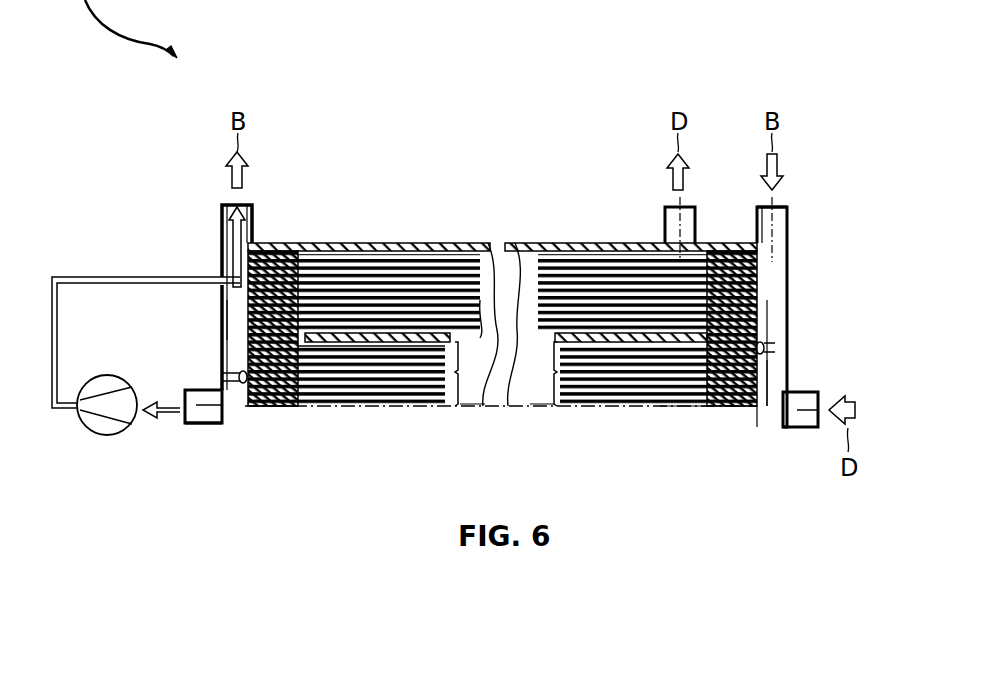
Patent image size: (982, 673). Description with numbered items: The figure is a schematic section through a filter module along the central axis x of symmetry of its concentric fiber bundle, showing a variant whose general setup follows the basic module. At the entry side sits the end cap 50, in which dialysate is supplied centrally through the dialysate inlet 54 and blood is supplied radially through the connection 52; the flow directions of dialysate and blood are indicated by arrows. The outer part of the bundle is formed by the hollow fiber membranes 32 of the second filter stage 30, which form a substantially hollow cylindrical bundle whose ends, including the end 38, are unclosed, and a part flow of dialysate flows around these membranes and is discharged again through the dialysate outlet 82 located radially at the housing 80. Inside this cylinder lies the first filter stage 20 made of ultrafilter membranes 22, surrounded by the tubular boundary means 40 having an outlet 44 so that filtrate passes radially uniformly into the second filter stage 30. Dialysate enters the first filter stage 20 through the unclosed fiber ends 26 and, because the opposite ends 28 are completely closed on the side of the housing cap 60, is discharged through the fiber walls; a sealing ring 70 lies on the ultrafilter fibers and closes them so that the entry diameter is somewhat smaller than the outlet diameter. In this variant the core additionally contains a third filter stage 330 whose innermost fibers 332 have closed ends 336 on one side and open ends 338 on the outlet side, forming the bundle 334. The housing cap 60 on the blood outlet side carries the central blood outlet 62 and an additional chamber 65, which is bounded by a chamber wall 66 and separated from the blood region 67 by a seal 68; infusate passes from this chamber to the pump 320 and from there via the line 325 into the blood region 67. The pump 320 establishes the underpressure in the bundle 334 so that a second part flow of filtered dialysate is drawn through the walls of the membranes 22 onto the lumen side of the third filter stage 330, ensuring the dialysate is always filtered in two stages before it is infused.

The first filter stage 20 is at (483, 407).
The ultrafilter membranes 22 is at (625, 355).
The unclosed hollow fiber membrane ends 26 is at (757, 378).
The closed ends of the hollow fibers 28 is at (250, 358).
The second filter stage 30 is at (495, 295).
The hollow fiber membranes 32 is at (427, 280).
The end of the fiber bundle 38 is at (252, 260).
The boundary means 40 is at (470, 330).
The outlet 44 is at (302, 335).
The end cap 50 is at (787, 272).
The blood connection 52 is at (787, 222).
The dialysate inlet 54 is at (797, 428).
The housing cap 60 is at (222, 268).
The blood outlet 62 is at (253, 222).
The additional chamber 65 is at (227, 402).
The fitting wall 66 is at (193, 428).
The blood region 67 is at (234, 323).
The seal 68 is at (234, 388).
The sealing ring 70 is at (770, 345).
The housing 80 is at (395, 247).
The dialysate outlet 82 is at (665, 206).
The pump 320 is at (104, 437).
The line 325 is at (88, 276).
The third filter stage 330 is at (473, 407).
The innermost fibers 332 is at (345, 408).
The bundle 334 is at (405, 408).
The closed ends 336 is at (760, 408).
The open ends 338 is at (270, 400).
The axis x is at (680, 408).